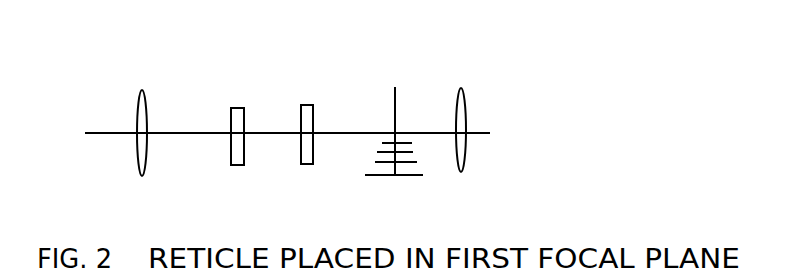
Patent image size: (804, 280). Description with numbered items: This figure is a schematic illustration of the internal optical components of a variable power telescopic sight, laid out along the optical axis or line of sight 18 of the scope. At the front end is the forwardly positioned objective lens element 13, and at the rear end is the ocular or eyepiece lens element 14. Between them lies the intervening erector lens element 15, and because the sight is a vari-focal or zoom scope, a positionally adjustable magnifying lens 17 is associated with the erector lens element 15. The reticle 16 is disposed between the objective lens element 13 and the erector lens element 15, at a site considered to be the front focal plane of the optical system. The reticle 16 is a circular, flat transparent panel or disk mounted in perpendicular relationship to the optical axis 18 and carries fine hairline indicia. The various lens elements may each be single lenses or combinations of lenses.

The optical axis 18 is at (72, 77).
The eyepiece lens element 14 is at (156, 98).
The magnifying lens 17 is at (244, 92).
The erector lens element 15 is at (327, 92).
The reticle 16 is at (400, 97).
The objective lens element 13 is at (475, 96).